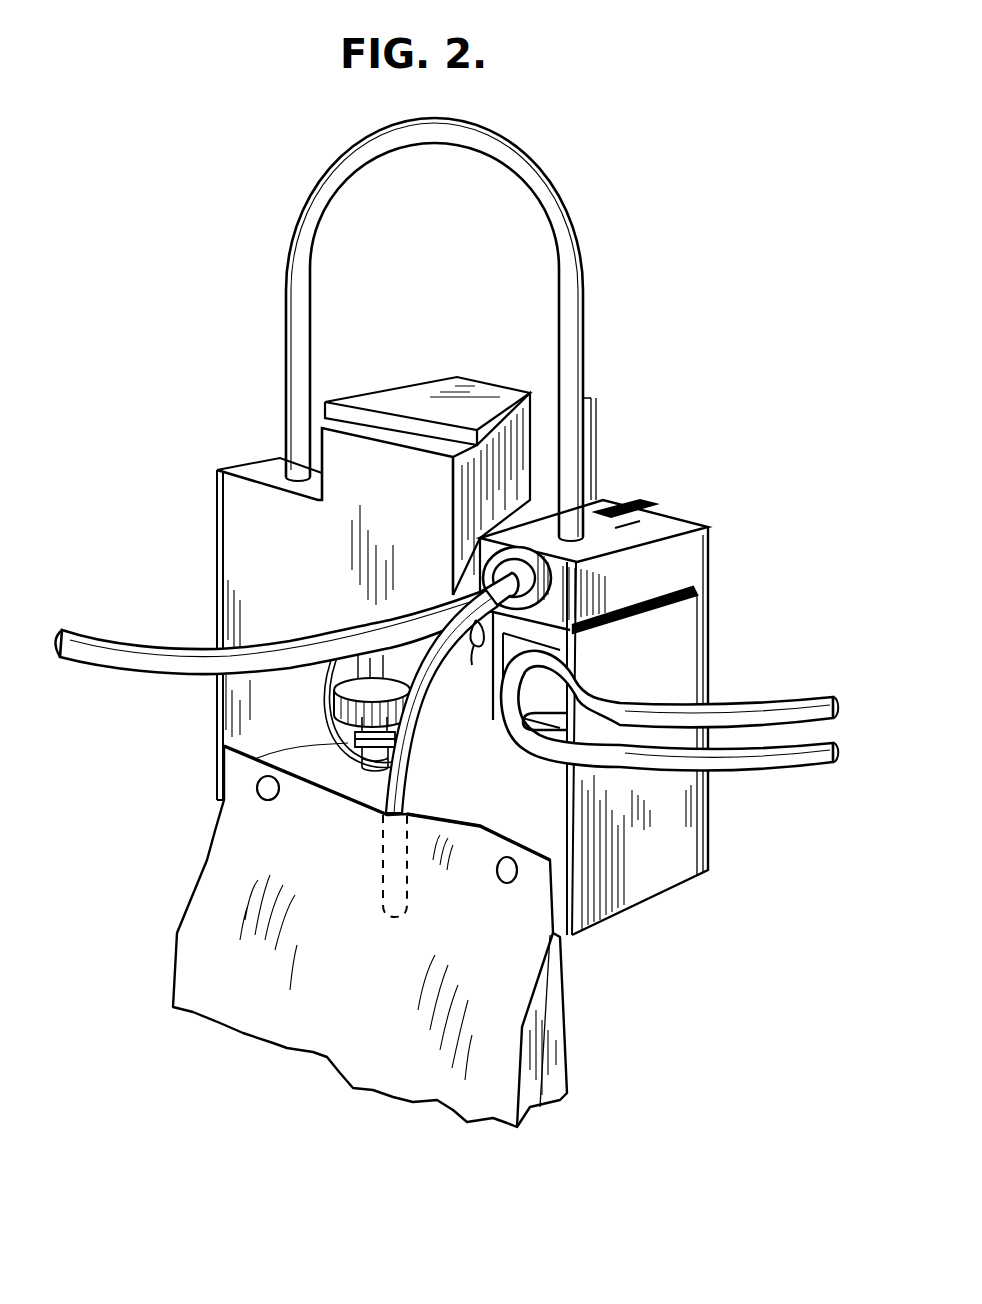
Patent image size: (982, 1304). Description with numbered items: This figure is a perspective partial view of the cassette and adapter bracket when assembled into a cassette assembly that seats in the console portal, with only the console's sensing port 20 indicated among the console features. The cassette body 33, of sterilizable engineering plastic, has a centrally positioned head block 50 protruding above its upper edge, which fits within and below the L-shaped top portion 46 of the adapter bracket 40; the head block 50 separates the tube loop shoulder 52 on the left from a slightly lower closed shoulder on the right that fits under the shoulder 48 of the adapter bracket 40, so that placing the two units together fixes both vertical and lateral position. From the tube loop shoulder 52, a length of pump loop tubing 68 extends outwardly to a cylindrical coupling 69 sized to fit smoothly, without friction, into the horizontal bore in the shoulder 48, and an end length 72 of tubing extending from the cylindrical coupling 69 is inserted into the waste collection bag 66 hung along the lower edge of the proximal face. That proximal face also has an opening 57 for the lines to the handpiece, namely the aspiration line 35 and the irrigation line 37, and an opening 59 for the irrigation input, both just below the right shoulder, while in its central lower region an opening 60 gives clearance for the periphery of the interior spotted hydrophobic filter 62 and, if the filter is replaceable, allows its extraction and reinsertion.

The sensing port 20 is at (140, 655).
The cassette body 33 is at (662, 858).
The aspiration line 35 is at (812, 695).
The irrigation line 37 is at (822, 760).
The adapter bracket 40 is at (649, 701).
The L-shaped top portion 46 is at (530, 440).
The shoulder 48 is at (639, 686).
The head block 50 is at (345, 455).
The tube loop shoulder 52 is at (263, 470).
The opening for the lines to the handpiece 57 is at (585, 645).
The opening for the irrigation input 59 is at (476, 665).
The opening 60 is at (247, 767).
The spotted hydrophobic filter 62 is at (333, 695).
The waste collection bag 66 is at (568, 1050).
The pump loop tubing 68 is at (586, 262).
The cylindrical coupling 69 is at (640, 533).
The end length of tubing 72 is at (410, 758).